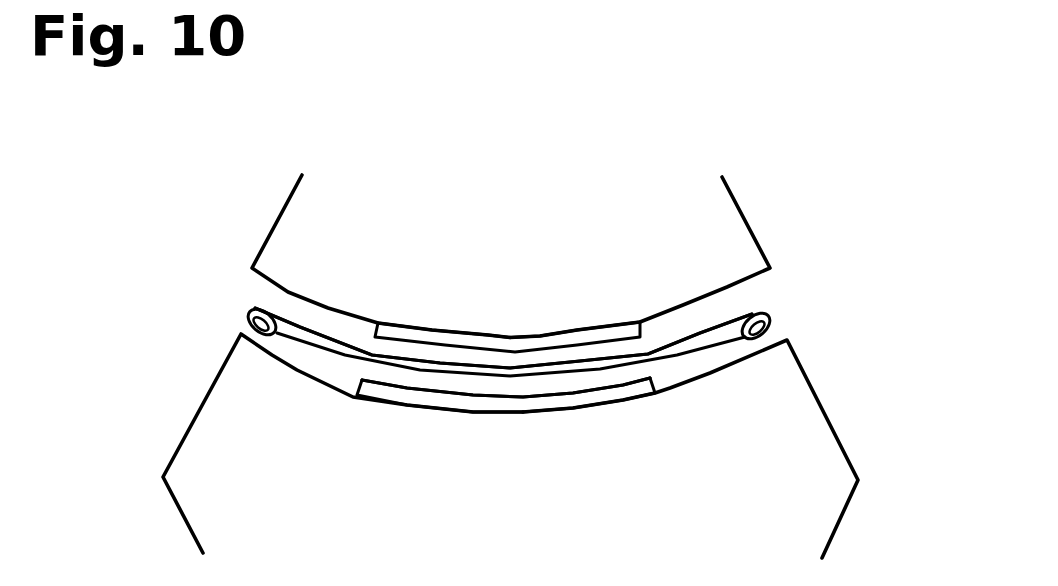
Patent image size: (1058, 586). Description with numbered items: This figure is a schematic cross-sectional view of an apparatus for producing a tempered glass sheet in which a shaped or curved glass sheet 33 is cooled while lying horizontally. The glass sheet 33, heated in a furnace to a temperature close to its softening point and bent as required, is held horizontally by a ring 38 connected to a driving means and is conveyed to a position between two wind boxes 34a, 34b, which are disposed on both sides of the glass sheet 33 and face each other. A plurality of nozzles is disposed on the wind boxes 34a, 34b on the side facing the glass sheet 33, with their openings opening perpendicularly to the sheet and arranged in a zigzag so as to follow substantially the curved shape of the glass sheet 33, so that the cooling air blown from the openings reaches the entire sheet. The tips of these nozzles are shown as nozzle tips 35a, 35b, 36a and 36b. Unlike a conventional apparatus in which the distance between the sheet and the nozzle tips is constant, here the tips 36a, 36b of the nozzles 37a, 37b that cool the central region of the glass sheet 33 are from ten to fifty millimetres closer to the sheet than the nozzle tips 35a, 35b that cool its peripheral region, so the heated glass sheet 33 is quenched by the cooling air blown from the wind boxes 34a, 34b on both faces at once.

The glass sheet 33 is at (723, 330).
The wind box 34a is at (293, 233).
The wind box 34b is at (193, 472).
The nozzle tip 35a is at (685, 305).
The nozzle tip 35b is at (703, 375).
The nozzle tip 36a is at (563, 353).
The nozzle tip 36b is at (567, 388).
The nozzle 37a is at (492, 347).
The nozzle 37b is at (495, 402).
The ring 38 is at (247, 322).